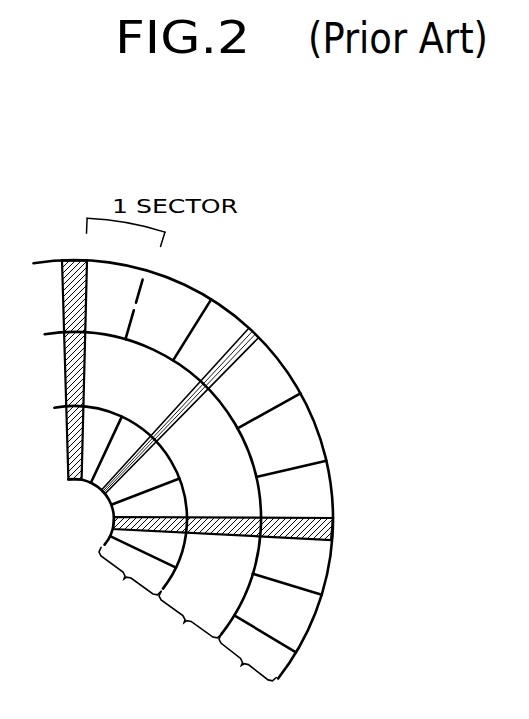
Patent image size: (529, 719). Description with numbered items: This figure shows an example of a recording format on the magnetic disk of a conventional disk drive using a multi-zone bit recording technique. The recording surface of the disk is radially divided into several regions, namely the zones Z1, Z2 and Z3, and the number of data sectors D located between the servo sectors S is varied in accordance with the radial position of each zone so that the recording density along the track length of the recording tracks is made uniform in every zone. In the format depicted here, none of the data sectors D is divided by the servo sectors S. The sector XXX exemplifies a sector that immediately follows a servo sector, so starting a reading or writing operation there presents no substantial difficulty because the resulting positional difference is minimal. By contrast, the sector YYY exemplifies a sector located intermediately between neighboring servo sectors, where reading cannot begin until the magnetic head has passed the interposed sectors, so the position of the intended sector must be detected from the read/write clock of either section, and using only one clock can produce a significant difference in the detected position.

The sector immediately following a servo sector XXX is at (118, 292).
The sector located intermediately between neighboring servo sectors YYY is at (160, 305).
The servo sector S is at (253, 350).
The data sector D is at (277, 382).
The zone Z1 is at (242, 666).
The zone Z2 is at (187, 624).
The zone Z3 is at (126, 581).